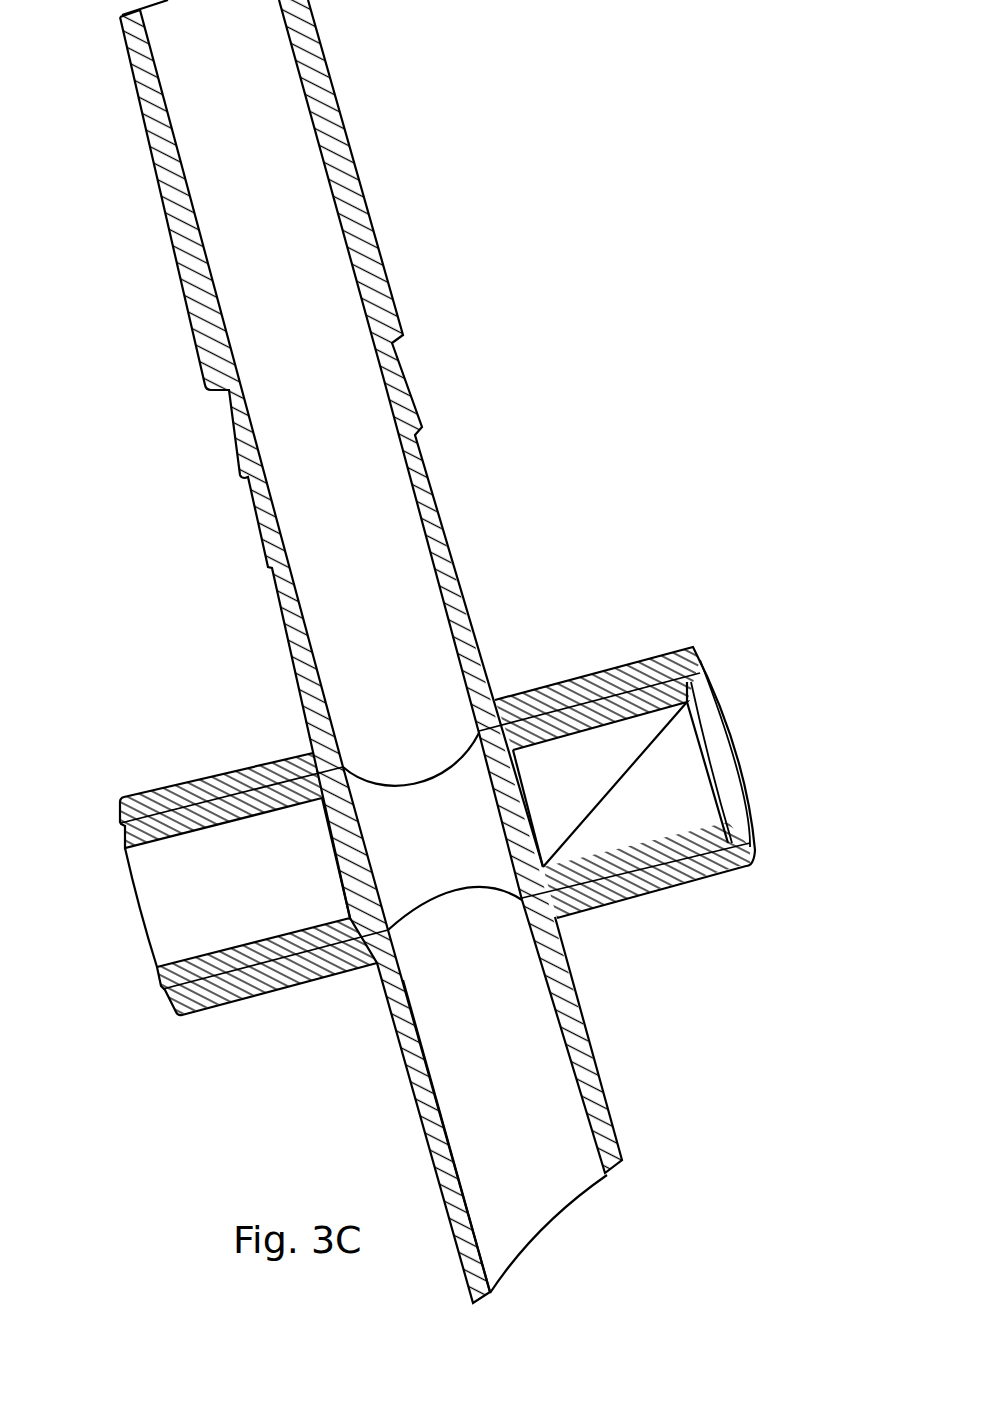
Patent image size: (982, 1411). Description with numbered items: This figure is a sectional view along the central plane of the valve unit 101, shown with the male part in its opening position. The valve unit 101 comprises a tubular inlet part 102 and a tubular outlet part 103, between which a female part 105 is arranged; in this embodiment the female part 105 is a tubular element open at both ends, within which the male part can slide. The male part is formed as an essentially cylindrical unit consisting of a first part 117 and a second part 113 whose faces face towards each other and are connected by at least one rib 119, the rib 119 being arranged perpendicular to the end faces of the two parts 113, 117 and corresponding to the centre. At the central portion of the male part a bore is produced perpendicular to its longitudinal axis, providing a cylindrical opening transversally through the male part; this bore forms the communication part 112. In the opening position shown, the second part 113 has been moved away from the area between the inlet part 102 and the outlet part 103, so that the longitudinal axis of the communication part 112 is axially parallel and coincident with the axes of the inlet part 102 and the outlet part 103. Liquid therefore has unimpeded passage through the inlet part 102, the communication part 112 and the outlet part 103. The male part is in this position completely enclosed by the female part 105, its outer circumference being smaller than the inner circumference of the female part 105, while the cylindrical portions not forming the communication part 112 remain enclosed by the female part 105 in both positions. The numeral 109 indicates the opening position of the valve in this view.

The valve unit 101 is at (504, 193).
The inlet part 102 is at (395, 532).
The outlet part 103 is at (533, 1082).
The female part 105 is at (157, 800).
The right side port 109 is at (502, 645).
The communication part 112 is at (355, 793).
The second part 113 is at (630, 845).
The first part 117 is at (248, 972).
The rib 119 is at (402, 860).